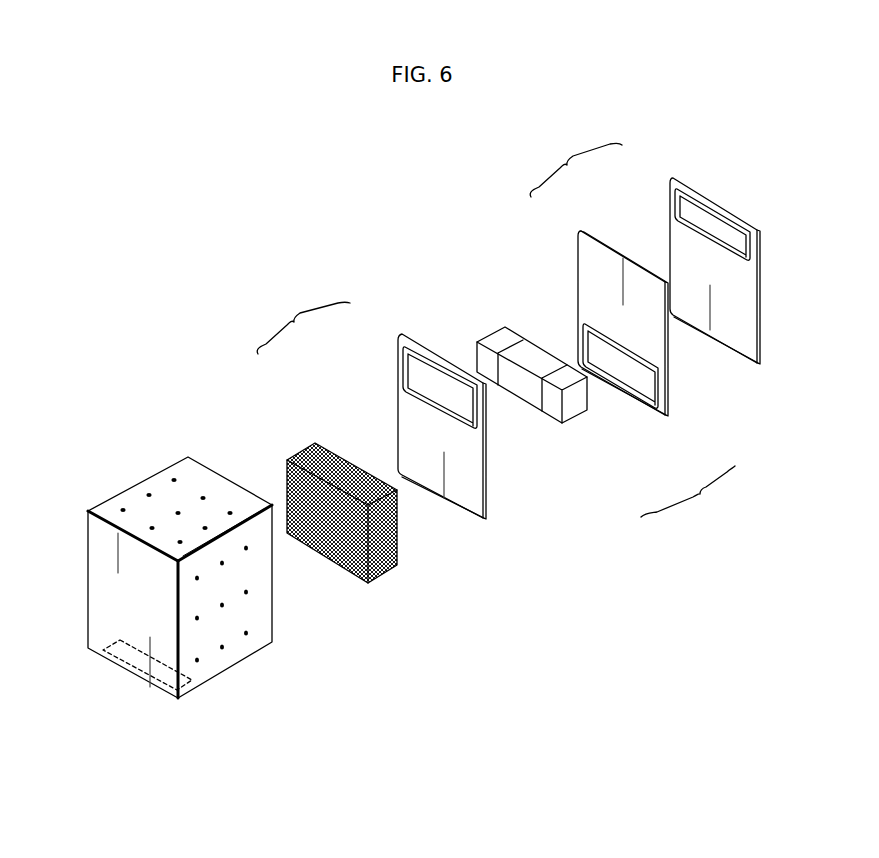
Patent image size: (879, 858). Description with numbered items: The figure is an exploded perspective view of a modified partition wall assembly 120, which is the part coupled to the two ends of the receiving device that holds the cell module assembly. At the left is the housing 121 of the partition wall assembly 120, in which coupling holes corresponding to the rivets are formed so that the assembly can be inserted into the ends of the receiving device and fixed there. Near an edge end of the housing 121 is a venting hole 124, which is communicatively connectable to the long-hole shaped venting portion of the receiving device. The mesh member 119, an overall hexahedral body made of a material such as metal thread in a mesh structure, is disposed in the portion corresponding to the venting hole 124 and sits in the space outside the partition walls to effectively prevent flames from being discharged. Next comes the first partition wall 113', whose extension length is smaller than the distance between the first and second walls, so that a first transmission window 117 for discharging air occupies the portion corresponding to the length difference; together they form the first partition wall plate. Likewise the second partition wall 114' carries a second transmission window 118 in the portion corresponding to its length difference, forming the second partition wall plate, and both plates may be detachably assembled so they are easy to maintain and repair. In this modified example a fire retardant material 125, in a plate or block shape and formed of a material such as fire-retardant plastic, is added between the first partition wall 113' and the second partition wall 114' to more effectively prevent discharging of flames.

The partition wall assembly 120 is at (165, 153).
The housing 121 is at (185, 472).
The venting hole 124 is at (130, 656).
The mesh member 119 is at (308, 452).
The first transmission window 117 is at (425, 379).
The first partition wall 113' is at (477, 307).
The fire retardant material 125 is at (498, 342).
The second partition wall 114' is at (650, 351).
The second transmission window 118 is at (617, 372).